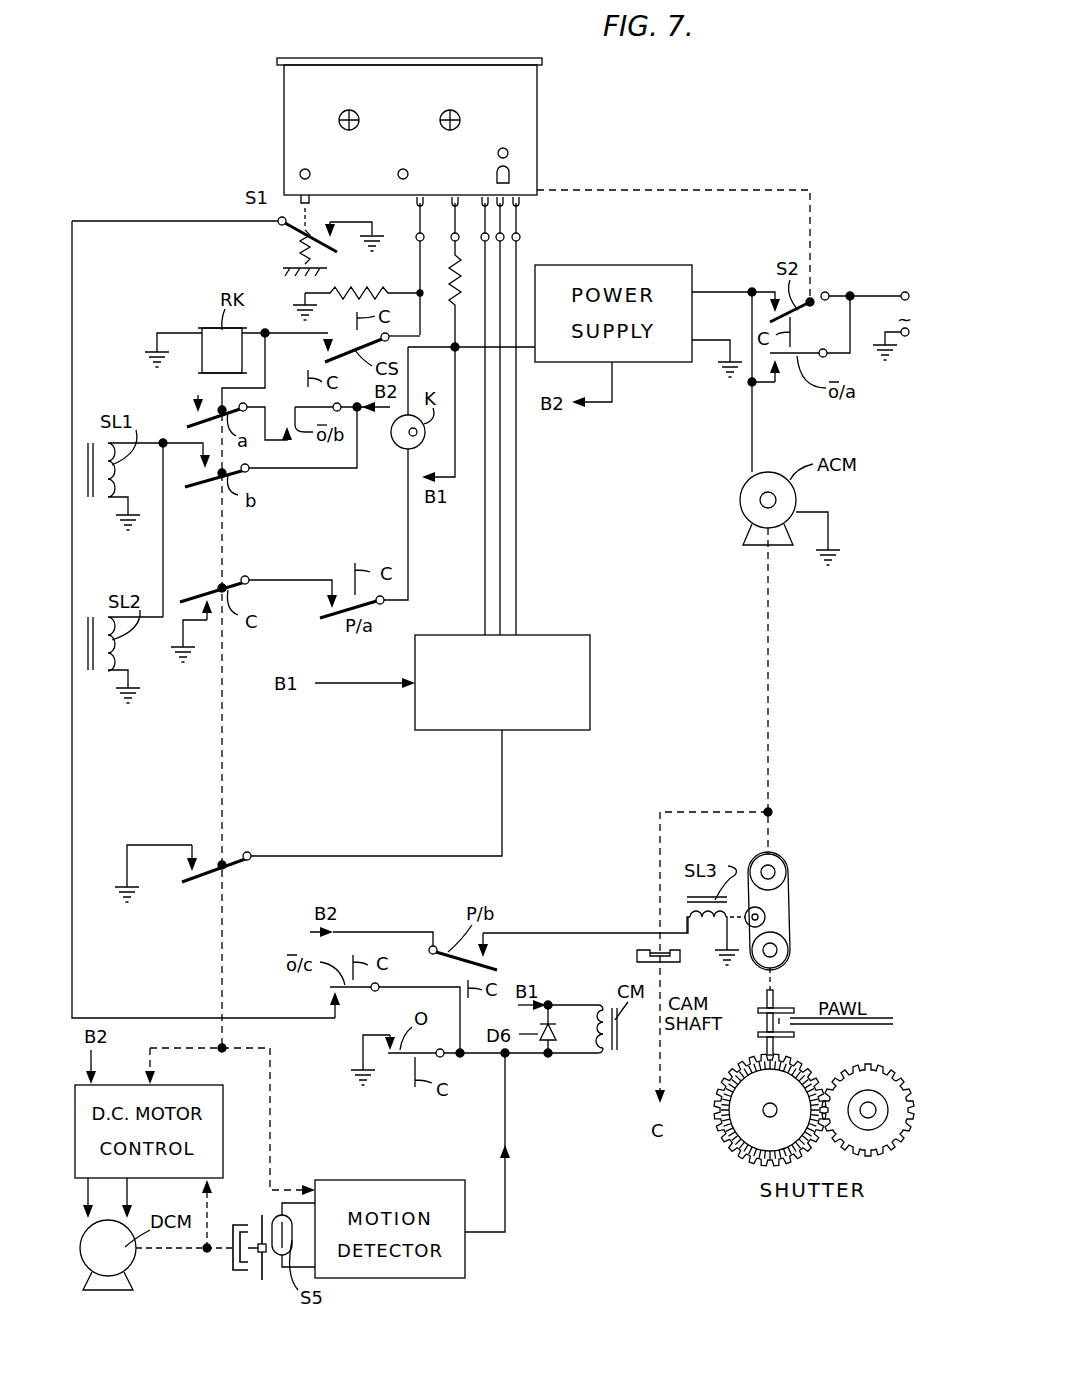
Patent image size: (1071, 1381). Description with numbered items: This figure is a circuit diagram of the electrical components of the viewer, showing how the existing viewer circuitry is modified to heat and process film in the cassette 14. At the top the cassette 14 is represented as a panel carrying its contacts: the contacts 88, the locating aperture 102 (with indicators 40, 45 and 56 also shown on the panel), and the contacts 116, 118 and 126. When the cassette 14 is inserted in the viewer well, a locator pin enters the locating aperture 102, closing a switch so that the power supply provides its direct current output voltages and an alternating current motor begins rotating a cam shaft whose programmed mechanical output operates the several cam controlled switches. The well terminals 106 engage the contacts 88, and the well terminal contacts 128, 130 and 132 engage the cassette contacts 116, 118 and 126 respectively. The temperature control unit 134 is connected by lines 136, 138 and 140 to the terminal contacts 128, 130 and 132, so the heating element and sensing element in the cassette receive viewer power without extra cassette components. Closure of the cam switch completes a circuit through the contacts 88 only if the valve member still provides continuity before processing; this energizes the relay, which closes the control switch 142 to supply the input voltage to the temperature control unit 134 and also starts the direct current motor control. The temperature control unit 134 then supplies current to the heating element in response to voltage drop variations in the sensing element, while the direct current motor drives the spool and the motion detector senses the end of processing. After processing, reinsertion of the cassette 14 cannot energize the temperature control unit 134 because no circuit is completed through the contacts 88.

The cassette 14 is at (363, 62).
The panel indicator lamps 40 is at (442, 113).
The panel indicator 45 is at (310, 170).
The panel indicator 56 is at (407, 169).
The contacts 88 is at (455, 200).
The locating aperture 102 is at (507, 148).
The terminals 106 is at (417, 222).
The contact 116 is at (487, 195).
The contact 118 is at (503, 197).
The contact 126 is at (516, 198).
The terminal contact 128 is at (515, 227).
The terminal contact 130 is at (500, 220).
The terminal contact 132 is at (516, 212).
The temperature control unit 134 is at (592, 690).
The line 136 is at (485, 508).
The line 138 is at (502, 472).
The line 140 is at (517, 523).
The control switch 142 is at (230, 860).